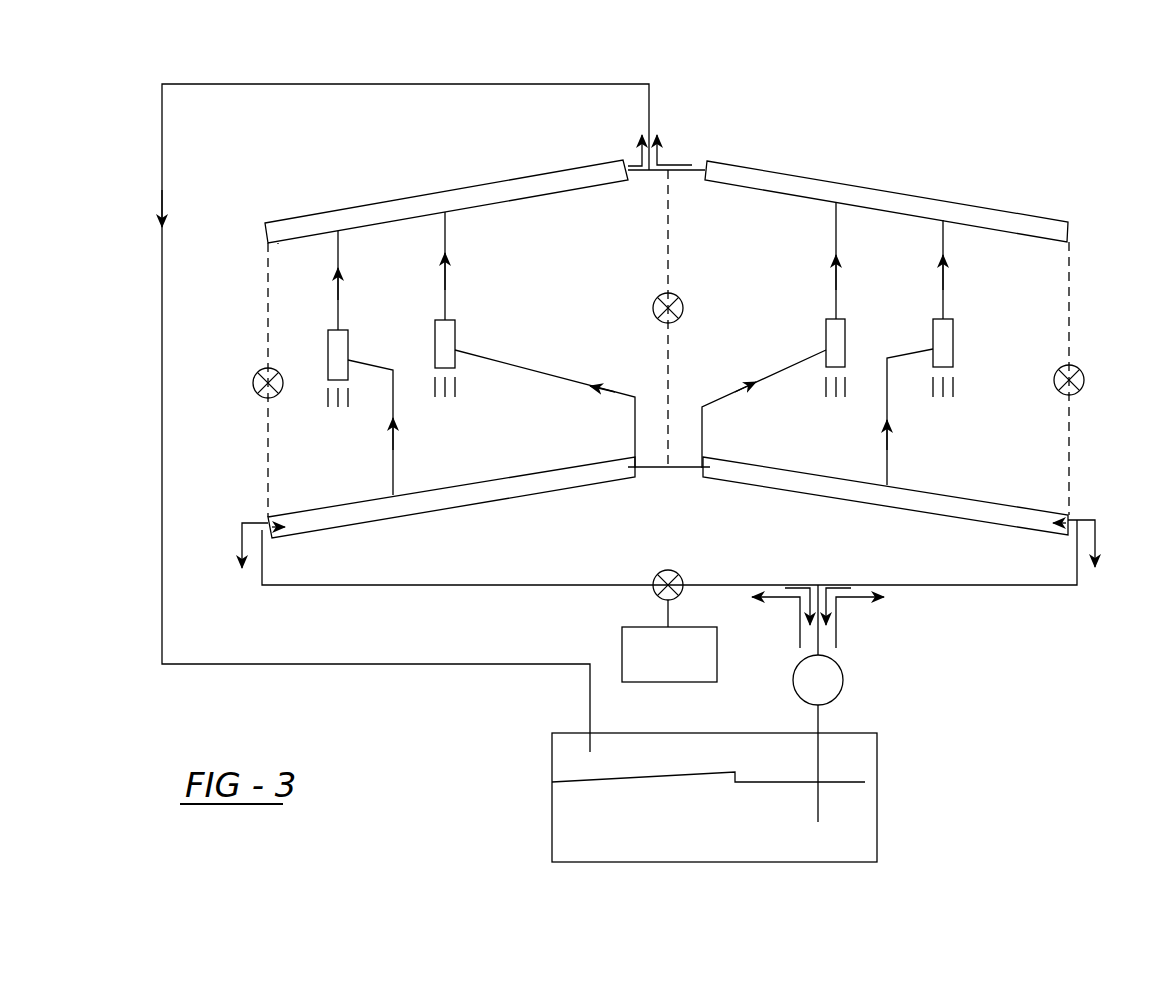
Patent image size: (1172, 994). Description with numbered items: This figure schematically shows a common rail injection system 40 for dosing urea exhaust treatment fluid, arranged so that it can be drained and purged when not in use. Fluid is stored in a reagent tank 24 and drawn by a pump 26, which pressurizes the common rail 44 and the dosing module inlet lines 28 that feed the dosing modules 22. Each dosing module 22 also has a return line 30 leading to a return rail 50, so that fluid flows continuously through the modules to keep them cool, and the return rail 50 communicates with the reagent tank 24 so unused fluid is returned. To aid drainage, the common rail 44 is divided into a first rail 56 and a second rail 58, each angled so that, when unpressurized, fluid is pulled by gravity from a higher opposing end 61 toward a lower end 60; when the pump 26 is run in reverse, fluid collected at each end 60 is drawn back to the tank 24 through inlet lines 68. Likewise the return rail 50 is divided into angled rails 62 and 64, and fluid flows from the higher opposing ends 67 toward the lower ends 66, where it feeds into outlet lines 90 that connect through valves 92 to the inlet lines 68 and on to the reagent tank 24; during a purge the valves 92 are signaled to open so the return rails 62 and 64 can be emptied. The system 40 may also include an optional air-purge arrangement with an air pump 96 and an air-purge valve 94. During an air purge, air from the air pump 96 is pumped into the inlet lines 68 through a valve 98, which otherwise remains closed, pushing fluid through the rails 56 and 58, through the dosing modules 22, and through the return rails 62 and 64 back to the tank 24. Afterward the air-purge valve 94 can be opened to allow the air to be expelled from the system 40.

The dosing module 22 is at (350, 339).
The reagent tank 24 is at (552, 825).
The pump 26 is at (845, 680).
The dosing module inlet line 28 is at (565, 372).
The return line 30 is at (338, 306).
The common rail injection system 40 is at (465, 710).
The common rail 44 is at (843, 512).
The return rail 50 is at (982, 168).
The first rail 56 is at (478, 510).
The second rail 58 is at (875, 515).
The end 60 is at (298, 540).
The opposing end 61 is at (633, 480).
The return rail (first) 62 is at (555, 184).
The return rail (second) 64 is at (905, 187).
The end 66 is at (282, 247).
The opposing end 67 is at (597, 166).
The inlet line 68 is at (483, 587).
The outlet line 90 is at (268, 435).
The valve 92 is at (253, 383).
The air-purge valve 94 is at (683, 300).
The air pump 96 is at (676, 683).
The valve 98 is at (670, 568).